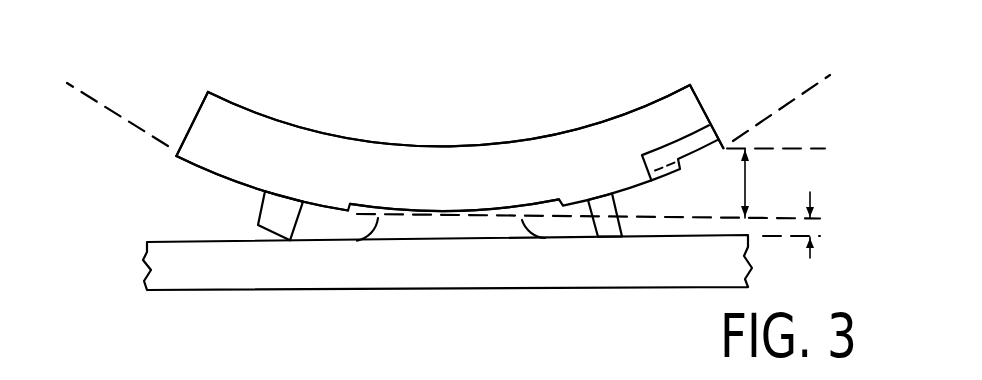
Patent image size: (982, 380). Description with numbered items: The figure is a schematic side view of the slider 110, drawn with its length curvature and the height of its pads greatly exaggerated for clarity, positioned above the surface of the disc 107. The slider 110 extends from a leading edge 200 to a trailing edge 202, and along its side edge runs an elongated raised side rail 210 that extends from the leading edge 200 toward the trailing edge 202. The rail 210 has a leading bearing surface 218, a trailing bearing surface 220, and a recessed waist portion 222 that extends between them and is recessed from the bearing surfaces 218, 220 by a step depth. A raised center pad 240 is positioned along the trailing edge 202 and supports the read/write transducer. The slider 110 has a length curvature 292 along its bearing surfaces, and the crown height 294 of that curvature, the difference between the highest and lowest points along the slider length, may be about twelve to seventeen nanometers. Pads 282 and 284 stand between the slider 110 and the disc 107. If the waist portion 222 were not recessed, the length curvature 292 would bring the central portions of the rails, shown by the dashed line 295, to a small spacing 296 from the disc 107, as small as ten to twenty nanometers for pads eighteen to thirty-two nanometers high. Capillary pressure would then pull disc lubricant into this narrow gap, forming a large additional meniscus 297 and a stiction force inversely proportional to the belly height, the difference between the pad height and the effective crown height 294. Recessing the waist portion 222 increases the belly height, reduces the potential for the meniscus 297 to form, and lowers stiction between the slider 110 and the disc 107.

The disc 107 is at (210, 273).
The slider 110 is at (468, 178).
The leading edge 200 is at (189, 124).
The trailing edge 202 is at (697, 88).
The side rail 210 is at (235, 183).
The leading bearing surface 218 is at (258, 188).
The trailing bearing surface 220 is at (573, 202).
The recessed waist portion 222 is at (413, 212).
The center pad 240 is at (708, 123).
The pad 282 is at (262, 211).
The pad 284 is at (626, 224).
The length curvature 292 is at (806, 92).
The crown height 294 is at (746, 183).
The dashed line 295 is at (461, 217).
The spacing 296 is at (812, 193).
The meniscus 297 is at (393, 228).